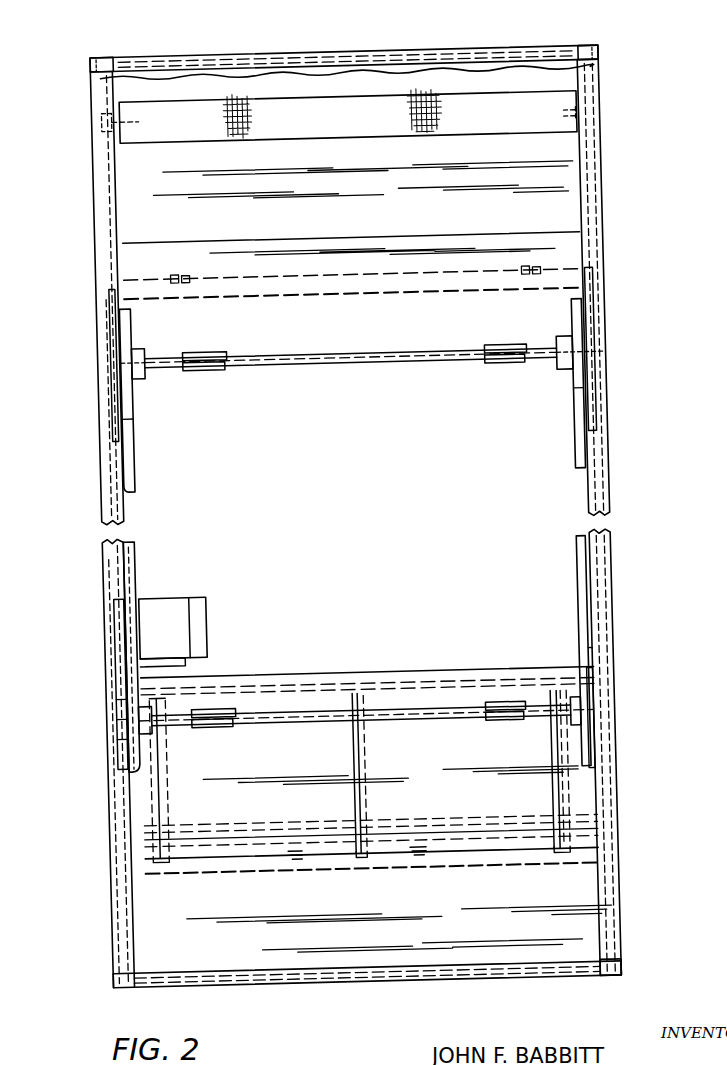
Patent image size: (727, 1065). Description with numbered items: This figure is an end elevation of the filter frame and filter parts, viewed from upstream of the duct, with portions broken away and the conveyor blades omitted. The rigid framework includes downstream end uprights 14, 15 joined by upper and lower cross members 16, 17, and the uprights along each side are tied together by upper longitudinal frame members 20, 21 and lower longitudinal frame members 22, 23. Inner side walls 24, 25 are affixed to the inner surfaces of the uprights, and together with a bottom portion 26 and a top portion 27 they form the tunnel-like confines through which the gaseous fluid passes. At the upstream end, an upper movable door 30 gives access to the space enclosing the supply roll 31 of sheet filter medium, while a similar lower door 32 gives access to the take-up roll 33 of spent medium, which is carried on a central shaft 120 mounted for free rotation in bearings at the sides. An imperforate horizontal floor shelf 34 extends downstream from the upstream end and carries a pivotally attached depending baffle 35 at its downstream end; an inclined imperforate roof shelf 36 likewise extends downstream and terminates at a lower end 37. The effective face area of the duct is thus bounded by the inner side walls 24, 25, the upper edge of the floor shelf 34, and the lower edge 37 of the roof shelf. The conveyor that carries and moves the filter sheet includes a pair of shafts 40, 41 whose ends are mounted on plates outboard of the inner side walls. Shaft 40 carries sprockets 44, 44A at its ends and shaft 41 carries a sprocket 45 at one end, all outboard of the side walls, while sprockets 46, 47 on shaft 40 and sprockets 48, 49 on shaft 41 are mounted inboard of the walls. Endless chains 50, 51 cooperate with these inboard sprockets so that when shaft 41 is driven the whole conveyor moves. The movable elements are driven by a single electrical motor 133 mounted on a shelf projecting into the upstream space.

The downstream end upright 14 is at (600, 592).
The downstream end upright 15 is at (110, 509).
The cross member 16 is at (275, 58).
The cross member 17 is at (362, 984).
The upper longitudinal frame member 20 is at (96, 71).
The upper longitudinal frame member 21 is at (598, 72).
The lower longitudinal frame member 22 is at (88, 949).
The lower longitudinal frame member 23 is at (600, 962).
The inner side wall 24 is at (122, 513).
The inner side wall 25 is at (588, 486).
The bottom portion 26 is at (418, 986).
The top portion 27 is at (470, 47).
The upper movable door 30 is at (116, 171).
The supply roll 31 is at (535, 118).
The lower door 32 is at (568, 902).
The take-up roll 33 is at (388, 868).
The floor shelf 34 is at (388, 677).
The depending baffle 35 is at (372, 771).
The roof shelf 36 is at (268, 294).
The lower end 37 is at (458, 305).
The shaft 40 is at (323, 372).
The shaft 41 is at (300, 722).
The sprocket 44 is at (108, 306).
The sprocket 44A is at (584, 326).
The sprocket 45 is at (112, 770).
The sprocket 46 is at (128, 412).
The sprocket 47 is at (570, 393).
The sprocket 48 is at (112, 790).
The sprocket 49 is at (572, 760).
The endless chain 50 is at (126, 476).
The endless chain 51 is at (565, 556).
The central shaft 120 is at (228, 845).
The electrical motor 133 is at (198, 604).